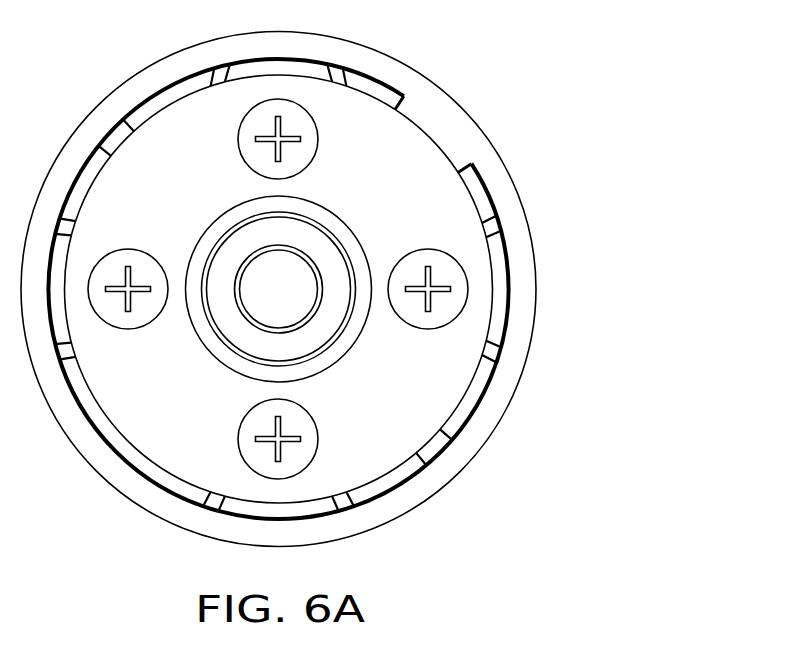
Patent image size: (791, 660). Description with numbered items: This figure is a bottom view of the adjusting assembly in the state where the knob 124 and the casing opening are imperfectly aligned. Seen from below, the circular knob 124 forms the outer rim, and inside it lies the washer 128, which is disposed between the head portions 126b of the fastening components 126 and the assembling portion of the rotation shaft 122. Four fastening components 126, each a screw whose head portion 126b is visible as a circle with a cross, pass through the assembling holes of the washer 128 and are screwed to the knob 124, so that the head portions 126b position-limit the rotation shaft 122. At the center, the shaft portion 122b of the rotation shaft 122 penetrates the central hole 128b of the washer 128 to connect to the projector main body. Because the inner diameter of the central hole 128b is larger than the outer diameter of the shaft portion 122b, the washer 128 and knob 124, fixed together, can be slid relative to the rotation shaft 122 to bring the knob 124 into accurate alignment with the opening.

The knob 124 is at (452, 121).
The washer 128 is at (430, 193).
The central hole 128b is at (318, 203).
The fastening component 126 is at (381, 289).
The head portion 126b is at (453, 289).
The rotation shaft 122 is at (469, 331).
The shaft portion 122b is at (285, 293).